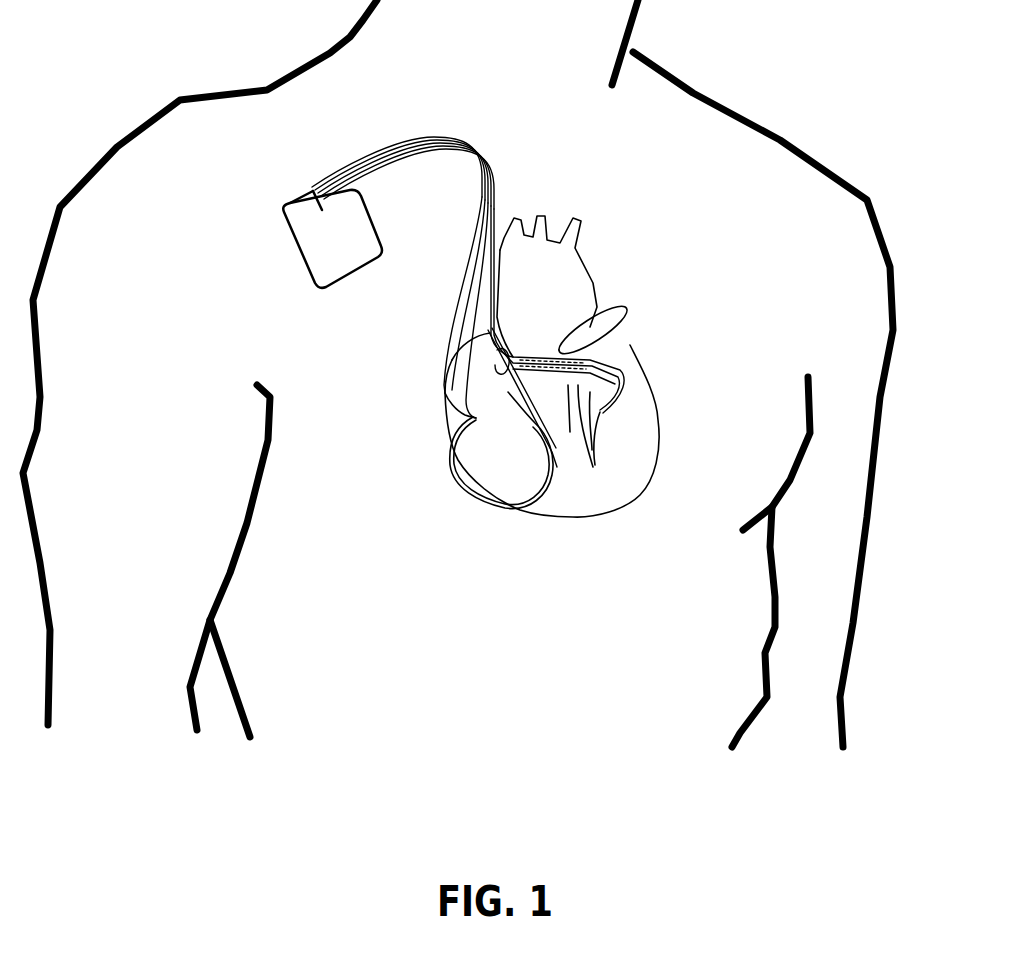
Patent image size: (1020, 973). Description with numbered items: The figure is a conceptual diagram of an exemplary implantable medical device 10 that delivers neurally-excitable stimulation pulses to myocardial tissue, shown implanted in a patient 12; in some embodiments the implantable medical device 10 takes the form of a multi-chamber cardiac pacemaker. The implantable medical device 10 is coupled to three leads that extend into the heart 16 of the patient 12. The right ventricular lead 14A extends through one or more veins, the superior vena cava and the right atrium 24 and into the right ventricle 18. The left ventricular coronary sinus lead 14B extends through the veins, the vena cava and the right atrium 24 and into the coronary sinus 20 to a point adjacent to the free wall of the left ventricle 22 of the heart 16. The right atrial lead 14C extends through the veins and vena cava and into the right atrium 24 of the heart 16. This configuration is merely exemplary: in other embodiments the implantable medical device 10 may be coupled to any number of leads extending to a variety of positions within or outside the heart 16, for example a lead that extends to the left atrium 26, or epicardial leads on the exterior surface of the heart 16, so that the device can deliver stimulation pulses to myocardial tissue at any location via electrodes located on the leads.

The implantable medical device 10 is at (280, 272).
The patient 12 is at (808, 95).
The right ventricular lead 14A is at (474, 244).
The left ventricular coronary sinus lead 14B is at (492, 190).
The right atrial lead 14C is at (474, 192).
The heart 16 is at (632, 522).
The right ventricle 18 is at (478, 472).
The coronary sinus 20 is at (530, 354).
The left ventricle 22 is at (637, 420).
The right atrium 24 is at (443, 392).
The left atrium 26 is at (570, 318).